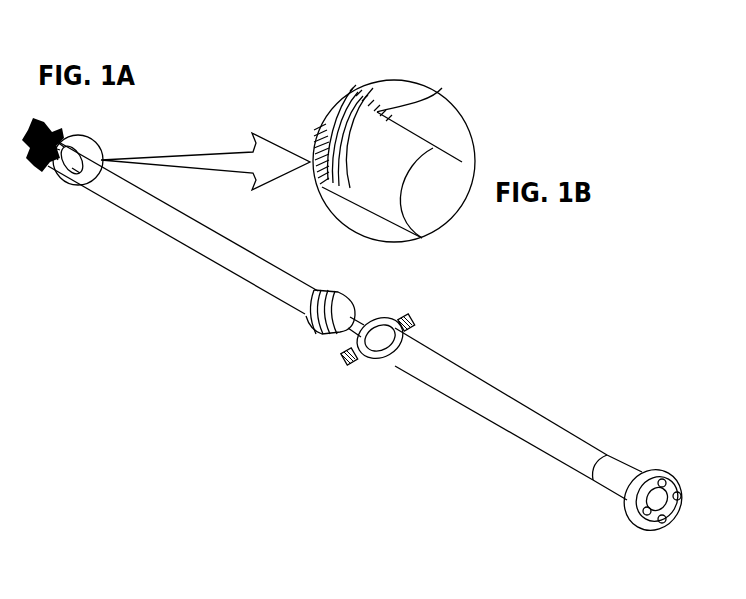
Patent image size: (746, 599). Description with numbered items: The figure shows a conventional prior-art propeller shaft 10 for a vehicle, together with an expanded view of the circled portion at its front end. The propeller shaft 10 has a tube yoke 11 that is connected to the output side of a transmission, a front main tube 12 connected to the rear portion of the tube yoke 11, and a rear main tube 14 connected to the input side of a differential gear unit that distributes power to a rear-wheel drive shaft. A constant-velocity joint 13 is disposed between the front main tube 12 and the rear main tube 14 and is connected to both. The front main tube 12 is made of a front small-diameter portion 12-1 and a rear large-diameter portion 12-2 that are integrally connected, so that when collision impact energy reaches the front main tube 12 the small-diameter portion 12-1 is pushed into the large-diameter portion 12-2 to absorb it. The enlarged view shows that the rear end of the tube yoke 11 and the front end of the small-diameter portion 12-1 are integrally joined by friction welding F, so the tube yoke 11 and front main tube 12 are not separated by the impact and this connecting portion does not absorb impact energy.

In FIG. 1A, the propeller shaft 10 is at (476, 307).
In FIG. 1B, the tube yoke 11 is at (393, 80).
In FIG. 1A, the front main tube 12 is at (220, 270).
In FIG. 1A, the front small-diameter portion 12-1 is at (60, 174).
In FIG. 1B, the front small-diameter portion 12-1 is at (413, 143).
In FIG. 1A, the rear large-diameter portion 12-2 is at (112, 200).
In FIG. 1B, the rear large-diameter portion 12-2 is at (464, 159).
In FIG. 1A, the constant-velocity joint 13 is at (350, 286).
In FIG. 1A, the rear main tube 14 is at (496, 380).
In FIG. 1B, the friction welding F is at (442, 88).